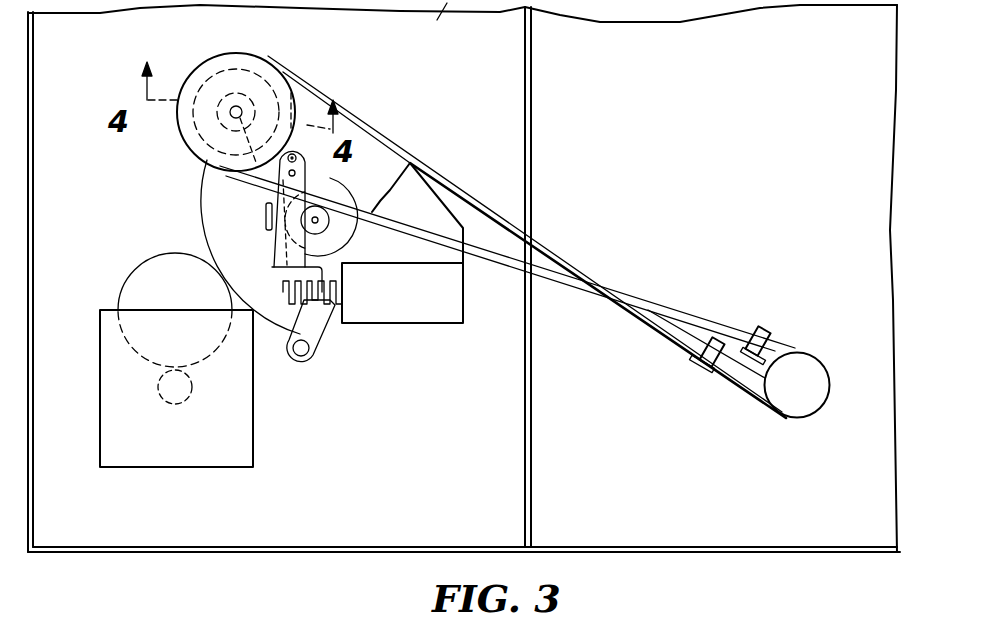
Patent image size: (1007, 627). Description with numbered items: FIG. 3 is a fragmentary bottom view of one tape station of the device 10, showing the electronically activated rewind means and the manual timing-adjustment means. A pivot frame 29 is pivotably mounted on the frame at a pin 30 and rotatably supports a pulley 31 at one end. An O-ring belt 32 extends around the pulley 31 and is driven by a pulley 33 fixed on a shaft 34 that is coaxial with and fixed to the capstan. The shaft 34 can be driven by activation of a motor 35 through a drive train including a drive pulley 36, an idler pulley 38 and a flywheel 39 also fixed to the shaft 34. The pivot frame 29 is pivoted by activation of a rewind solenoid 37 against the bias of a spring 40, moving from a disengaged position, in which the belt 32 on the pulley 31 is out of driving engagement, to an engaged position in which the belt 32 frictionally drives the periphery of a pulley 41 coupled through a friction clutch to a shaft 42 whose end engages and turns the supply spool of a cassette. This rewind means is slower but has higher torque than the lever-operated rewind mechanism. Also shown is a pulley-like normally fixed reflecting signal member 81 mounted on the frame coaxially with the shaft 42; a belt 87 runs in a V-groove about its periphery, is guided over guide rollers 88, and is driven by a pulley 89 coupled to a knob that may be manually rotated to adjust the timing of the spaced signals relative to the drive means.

The device 10 is at (326, 560).
The pivot frame 29 is at (273, 255).
The pin 30 is at (308, 178).
The pulley 31 is at (296, 80).
The O-ring belt 32 is at (296, 173).
The pulley 33 is at (331, 224).
The shaft 34 is at (317, 222).
The motor 35 is at (121, 453).
The drive pulley 36 is at (185, 401).
The rewind solenoid 37 is at (442, 325).
The idler pulley 38 is at (143, 278).
The flywheel 39 is at (206, 221).
The spring 40 is at (328, 325).
The pulley 41 is at (218, 72).
The shaft 42 is at (241, 107).
The reflecting signal member 81 is at (206, 72).
The belt 87 is at (589, 285).
The guide rollers 88 is at (757, 340).
The pulley 89 is at (808, 408).